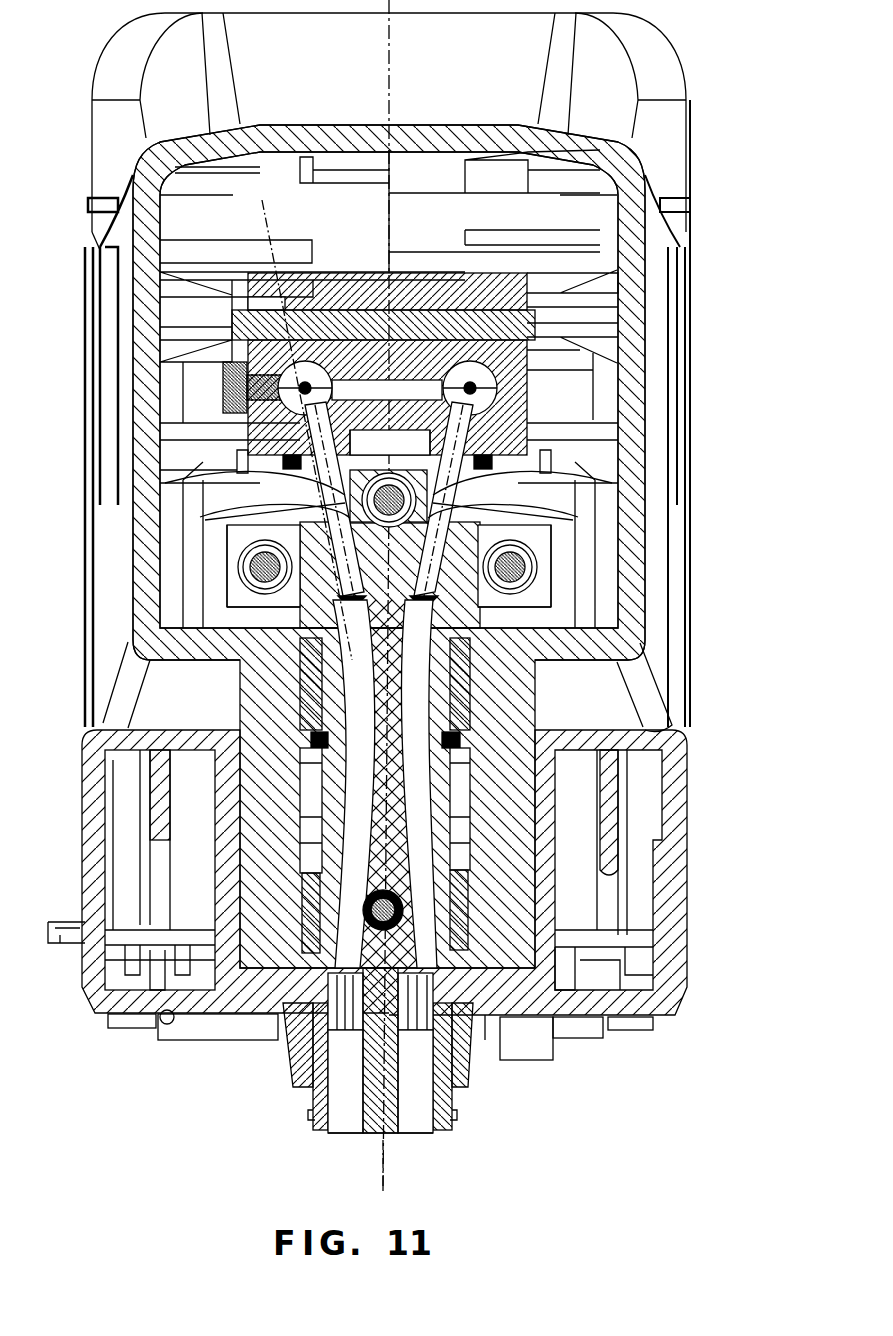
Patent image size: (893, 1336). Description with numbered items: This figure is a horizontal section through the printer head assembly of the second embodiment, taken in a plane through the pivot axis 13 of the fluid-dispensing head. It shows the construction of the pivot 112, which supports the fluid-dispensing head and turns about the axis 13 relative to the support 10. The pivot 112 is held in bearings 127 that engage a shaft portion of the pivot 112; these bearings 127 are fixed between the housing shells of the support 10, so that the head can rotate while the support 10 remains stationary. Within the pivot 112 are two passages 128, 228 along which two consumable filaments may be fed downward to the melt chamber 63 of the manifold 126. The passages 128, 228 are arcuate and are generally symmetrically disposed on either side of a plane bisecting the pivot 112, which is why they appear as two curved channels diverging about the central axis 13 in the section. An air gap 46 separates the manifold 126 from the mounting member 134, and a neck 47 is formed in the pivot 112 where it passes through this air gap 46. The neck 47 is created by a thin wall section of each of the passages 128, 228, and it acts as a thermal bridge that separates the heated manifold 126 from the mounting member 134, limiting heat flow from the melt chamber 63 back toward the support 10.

The support 10 is at (250, 209).
The pivot axis 13 is at (386, 1160).
The air gap 46 is at (165, 493).
The neck 47 is at (265, 505).
The melt chamber 63 is at (372, 440).
The pivot 112 is at (310, 785).
The manifold 126 is at (527, 398).
The bearings 127 is at (538, 710).
The passage 128 is at (315, 690).
The mounting member 134 is at (533, 600).
The passage 228 is at (465, 690).